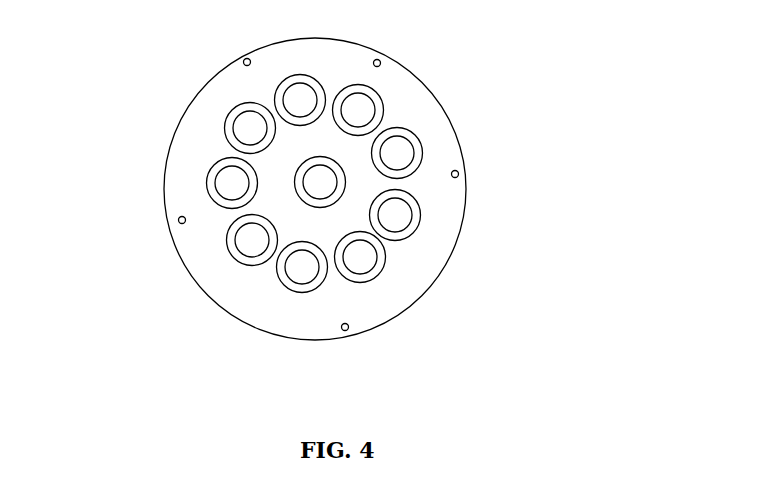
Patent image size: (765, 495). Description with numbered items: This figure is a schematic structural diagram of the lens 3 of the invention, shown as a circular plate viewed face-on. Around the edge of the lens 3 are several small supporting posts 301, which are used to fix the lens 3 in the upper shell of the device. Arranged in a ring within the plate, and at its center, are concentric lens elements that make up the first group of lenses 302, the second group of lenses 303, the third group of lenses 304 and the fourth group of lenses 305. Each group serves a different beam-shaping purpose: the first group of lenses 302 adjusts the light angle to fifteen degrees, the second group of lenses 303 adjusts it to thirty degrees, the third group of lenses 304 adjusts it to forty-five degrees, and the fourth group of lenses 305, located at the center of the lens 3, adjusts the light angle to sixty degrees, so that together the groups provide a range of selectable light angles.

The lens 3 is at (433, 100).
The supporting posts 301 is at (465, 175).
The first group of lenses 302 is at (333, 184).
The second group of lenses 303 is at (358, 110).
The third group of lenses 304 is at (397, 153).
The fourth group of lenses 305 is at (320, 182).